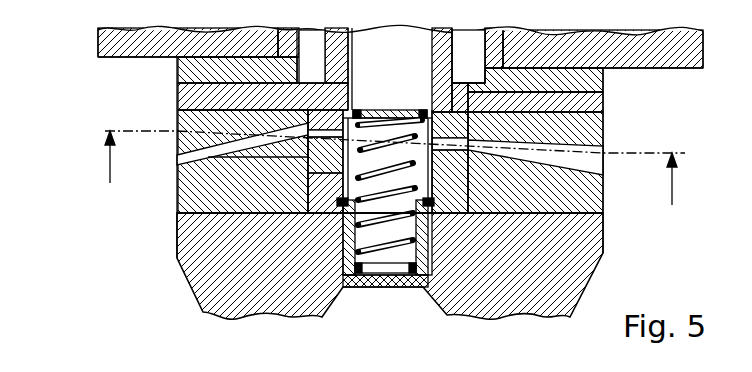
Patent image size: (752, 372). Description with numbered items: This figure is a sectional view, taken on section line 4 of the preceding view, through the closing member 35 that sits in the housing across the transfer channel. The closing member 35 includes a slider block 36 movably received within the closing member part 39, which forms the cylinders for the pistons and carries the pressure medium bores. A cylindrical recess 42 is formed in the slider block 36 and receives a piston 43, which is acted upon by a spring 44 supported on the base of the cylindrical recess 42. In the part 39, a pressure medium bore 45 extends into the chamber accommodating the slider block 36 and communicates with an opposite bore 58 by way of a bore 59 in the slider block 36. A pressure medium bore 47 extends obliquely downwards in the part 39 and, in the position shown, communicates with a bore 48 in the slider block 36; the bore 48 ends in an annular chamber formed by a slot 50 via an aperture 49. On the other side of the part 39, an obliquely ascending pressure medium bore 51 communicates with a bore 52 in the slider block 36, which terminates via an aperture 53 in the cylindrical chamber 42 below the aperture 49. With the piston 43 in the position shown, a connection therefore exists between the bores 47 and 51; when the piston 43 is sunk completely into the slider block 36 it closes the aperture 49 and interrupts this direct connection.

The section line 4- 4 is at (392, 162).
The closing member 35 is at (168, 203).
The slider block 36 is at (306, 189).
The closing member part 39 is at (178, 116).
The cylindrical recess 42 is at (420, 182).
The piston 43 is at (407, 288).
The spring 44 is at (343, 248).
The pressure medium bore 45 is at (227, 163).
The pressure medium bore 47 is at (537, 151).
The bore 48 is at (458, 118).
The aperture 49 is at (427, 124).
The slot 50 is at (379, 123).
The obliquely ascending pressure medium bore 51 is at (176, 148).
The bore 52 is at (323, 117).
The aperture 53 is at (353, 121).
The opposite bore 58 is at (512, 173).
The bore 59 is at (445, 172).